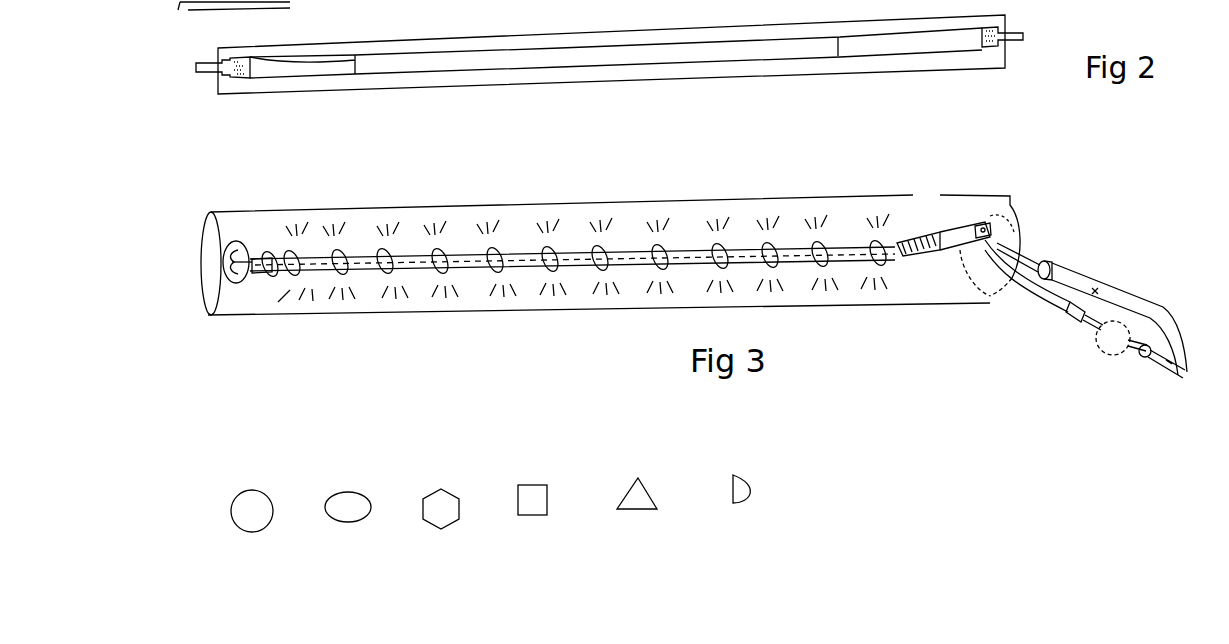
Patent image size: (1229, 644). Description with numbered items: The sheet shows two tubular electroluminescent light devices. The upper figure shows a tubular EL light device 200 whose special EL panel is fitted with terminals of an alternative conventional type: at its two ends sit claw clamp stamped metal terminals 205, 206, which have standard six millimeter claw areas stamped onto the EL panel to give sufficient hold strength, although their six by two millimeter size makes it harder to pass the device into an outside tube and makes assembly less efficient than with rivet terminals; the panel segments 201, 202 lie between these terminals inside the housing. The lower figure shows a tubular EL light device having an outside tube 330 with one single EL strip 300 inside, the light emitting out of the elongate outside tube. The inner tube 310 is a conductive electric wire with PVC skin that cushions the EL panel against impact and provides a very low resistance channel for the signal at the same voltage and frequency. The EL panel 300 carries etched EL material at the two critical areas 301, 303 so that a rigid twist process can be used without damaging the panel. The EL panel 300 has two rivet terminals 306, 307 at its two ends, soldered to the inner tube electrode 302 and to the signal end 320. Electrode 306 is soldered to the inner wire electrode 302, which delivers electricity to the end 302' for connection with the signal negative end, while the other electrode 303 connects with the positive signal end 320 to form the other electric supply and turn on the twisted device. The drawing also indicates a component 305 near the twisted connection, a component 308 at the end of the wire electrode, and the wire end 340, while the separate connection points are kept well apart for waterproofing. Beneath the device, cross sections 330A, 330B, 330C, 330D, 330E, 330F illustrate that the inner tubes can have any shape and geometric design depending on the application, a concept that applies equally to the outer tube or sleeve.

In FIG. 2, the tubular EL light device 200 is at (570, 54).
In FIG. 2, the first segment 201 is at (302, 66).
In FIG. 2, the second segment 202 is at (899, 43).
In FIG. 2, the claw clamp terminal 205 is at (998, 25).
In FIG. 2, the claw clamp terminal 206 is at (232, 58).
In FIG. 3, the EL strip 300 is at (500, 250).
In FIG. 3, the etched EL area 301 is at (267, 257).
In FIG. 3, the inner tube electrode 302 is at (270, 322).
In FIG. 3, the electrode end 302' is at (1075, 362).
In FIG. 3, the etched EL area 303 is at (910, 232).
In FIG. 3, the light emitter 305 is at (1000, 218).
In FIG. 3, the rivet terminal 306 is at (233, 242).
In FIG. 3, the rivet terminal 307 is at (988, 213).
In FIG. 3, the battery 308 is at (1117, 360).
In FIG. 3, the inner tube 310 is at (957, 255).
In FIG. 3, the signal end 320 is at (1112, 290).
In FIG. 3, the outside tube 330 is at (218, 317).
In FIG. 3, the inner tube shape 330A is at (258, 526).
In FIG. 3, the inner tube shape 330B is at (351, 522).
In FIG. 3, the inner tube shape 330C is at (449, 523).
In FIG. 3, the inner tube shape 330D is at (543, 518).
In FIG. 3, the inner tube shape 330E is at (642, 512).
In FIG. 3, the inner tube shape 330F is at (743, 508).
In FIG. 3, the wire end 340 is at (1183, 377).